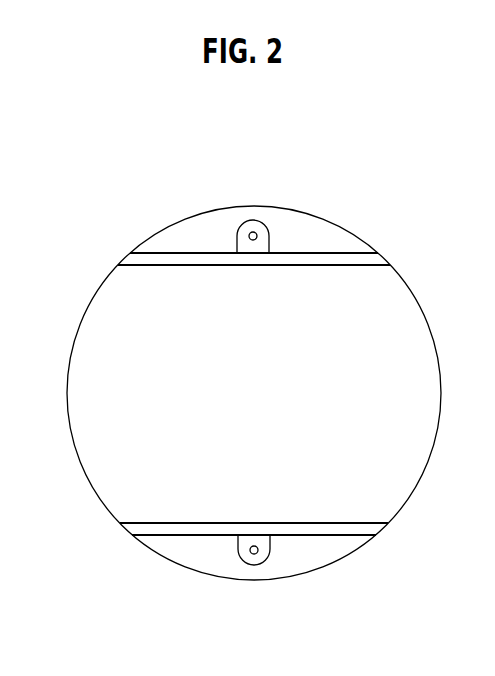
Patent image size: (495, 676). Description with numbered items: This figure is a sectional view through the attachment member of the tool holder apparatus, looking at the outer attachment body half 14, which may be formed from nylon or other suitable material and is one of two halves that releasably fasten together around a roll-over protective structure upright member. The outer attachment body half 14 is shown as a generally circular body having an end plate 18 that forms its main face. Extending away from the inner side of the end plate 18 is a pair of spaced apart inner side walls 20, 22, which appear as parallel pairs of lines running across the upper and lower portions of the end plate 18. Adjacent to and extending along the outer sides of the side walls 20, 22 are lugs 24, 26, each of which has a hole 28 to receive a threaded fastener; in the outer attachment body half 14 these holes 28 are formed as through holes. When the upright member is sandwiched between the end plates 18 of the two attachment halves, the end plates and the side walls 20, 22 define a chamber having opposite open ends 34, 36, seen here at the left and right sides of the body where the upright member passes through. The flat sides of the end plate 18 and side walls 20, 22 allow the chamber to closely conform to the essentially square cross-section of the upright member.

The outer attachment body half 14 is at (102, 502).
The end plate 18 is at (177, 411).
The inner side wall 20 is at (302, 267).
The inner side wall 22 is at (317, 522).
The lug 24 is at (237, 242).
The lug 26 is at (237, 548).
The hole 28 is at (257, 235).
The open end 34 is at (103, 327).
The open end 36 is at (408, 320).